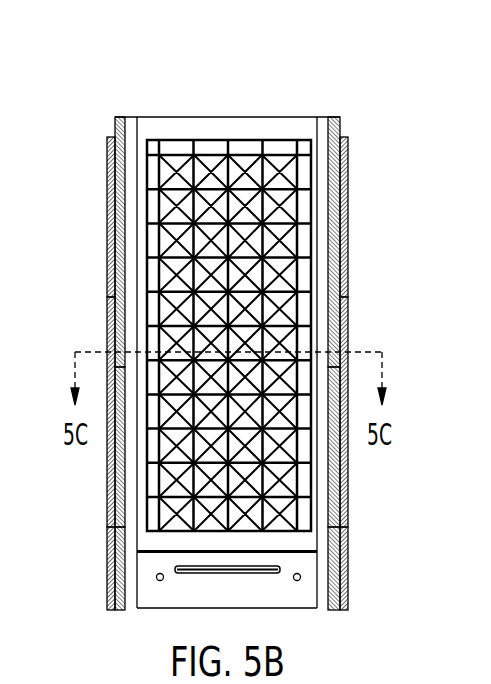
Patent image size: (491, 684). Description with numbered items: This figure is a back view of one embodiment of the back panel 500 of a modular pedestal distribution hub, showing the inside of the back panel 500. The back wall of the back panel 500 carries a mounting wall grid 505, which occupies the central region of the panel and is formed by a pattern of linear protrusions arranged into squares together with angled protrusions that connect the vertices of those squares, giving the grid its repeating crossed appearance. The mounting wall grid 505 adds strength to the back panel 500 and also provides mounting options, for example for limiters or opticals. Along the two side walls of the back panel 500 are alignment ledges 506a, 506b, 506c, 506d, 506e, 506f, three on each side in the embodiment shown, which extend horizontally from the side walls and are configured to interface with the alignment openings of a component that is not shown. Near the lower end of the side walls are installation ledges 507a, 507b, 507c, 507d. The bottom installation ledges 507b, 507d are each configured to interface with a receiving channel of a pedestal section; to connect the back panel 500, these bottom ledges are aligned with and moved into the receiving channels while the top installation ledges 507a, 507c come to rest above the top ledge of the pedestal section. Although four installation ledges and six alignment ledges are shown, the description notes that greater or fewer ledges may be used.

The back panel 500 is at (142, 80).
The mounting wall grid 505 is at (287, 243).
The alignment ledge 506a is at (133, 180).
The alignment ledge 506b is at (133, 255).
The alignment ledge 506c is at (133, 328).
The alignment ledge 506d is at (322, 180).
The alignment ledge 506e is at (322, 253).
The alignment ledge 506f is at (322, 327).
The top installation ledge 507a is at (132, 551).
The bottom installation ledge 507b is at (120, 578).
The top installation ledge 507c is at (324, 551).
The bottom installation ledge 507d is at (328, 575).